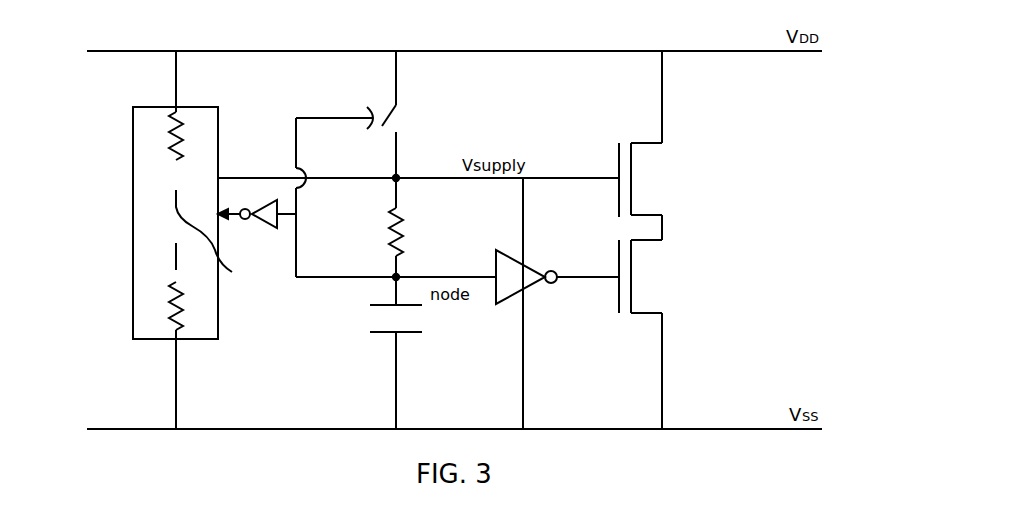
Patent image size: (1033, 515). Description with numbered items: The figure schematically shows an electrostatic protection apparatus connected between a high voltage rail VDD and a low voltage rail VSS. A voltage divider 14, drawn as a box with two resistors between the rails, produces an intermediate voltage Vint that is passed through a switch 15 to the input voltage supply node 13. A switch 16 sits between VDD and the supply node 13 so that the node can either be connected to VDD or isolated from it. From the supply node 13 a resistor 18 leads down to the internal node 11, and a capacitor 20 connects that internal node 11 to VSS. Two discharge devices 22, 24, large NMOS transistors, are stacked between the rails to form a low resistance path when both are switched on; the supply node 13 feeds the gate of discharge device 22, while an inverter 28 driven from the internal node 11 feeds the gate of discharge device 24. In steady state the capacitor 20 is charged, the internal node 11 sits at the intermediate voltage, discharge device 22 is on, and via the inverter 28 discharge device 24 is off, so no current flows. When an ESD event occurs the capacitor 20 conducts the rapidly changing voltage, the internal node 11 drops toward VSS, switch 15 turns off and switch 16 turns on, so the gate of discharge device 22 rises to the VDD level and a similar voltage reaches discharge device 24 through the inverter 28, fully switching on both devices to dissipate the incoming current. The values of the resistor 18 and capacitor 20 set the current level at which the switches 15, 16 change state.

The internal node 11 is at (401, 275).
The input voltage supply node 13 is at (400, 178).
The voltage divider 14 is at (133, 229).
The switch 15 is at (219, 240).
The switch 16 is at (403, 124).
The resistor 18 is at (405, 230).
The capacitor 20 is at (424, 331).
The discharge device 22 is at (665, 184).
The discharge device 24 is at (665, 282).
The inverter 28 is at (548, 284).